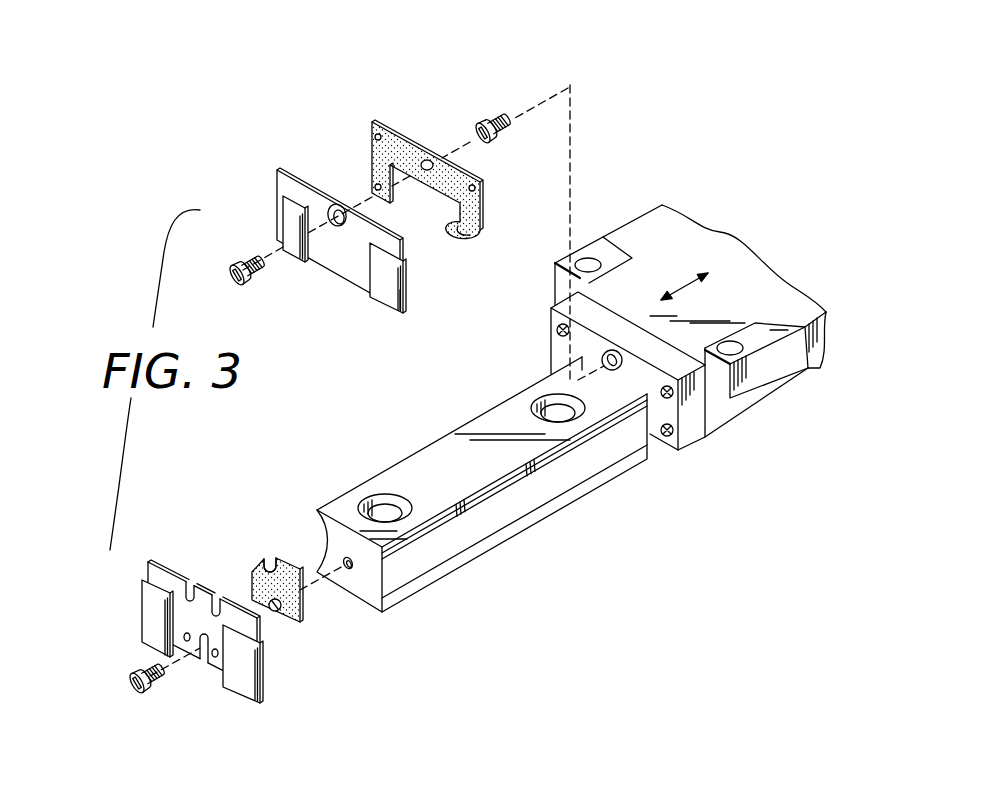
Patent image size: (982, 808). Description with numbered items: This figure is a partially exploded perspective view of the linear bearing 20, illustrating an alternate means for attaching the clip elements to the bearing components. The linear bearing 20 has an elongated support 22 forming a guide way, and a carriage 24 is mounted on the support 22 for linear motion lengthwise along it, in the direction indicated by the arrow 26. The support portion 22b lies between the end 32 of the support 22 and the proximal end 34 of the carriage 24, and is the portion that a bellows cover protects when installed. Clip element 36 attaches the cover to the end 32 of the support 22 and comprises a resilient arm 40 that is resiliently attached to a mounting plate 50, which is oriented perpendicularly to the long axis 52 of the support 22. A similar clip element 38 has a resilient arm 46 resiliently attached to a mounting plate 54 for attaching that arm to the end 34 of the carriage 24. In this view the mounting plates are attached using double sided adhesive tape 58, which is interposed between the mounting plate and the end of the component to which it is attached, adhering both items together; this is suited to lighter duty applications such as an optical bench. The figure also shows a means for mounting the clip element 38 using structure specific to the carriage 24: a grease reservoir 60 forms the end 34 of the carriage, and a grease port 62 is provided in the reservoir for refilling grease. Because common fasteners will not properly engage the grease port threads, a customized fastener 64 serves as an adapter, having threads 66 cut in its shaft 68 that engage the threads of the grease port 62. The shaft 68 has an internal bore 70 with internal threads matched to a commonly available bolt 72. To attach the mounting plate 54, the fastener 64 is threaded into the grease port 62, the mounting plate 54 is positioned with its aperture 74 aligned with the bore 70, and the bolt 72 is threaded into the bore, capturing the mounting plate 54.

The linear bearing 20 is at (645, 521).
The elongated support 22 is at (551, 502).
The support portion 22b is at (458, 553).
The carriage 24 is at (782, 389).
The arrow 26 is at (684, 287).
The end of support 32 is at (361, 594).
The proximal end of carriage 34 is at (553, 346).
The clip element 36 is at (124, 613).
The clip element 38 is at (349, 284).
The resilient arm 40 is at (240, 691).
The resilient arm 46 is at (383, 302).
The mounting plate 50 is at (211, 665).
The long axis of support 52 is at (308, 590).
The mounting plate 54 is at (406, 302).
The double sided adhesive tape 58 is at (470, 230).
The grease reservoir 60 is at (690, 433).
The grease port 62 is at (612, 372).
The customized fastener 64 is at (477, 122).
The threads 66 is at (507, 118).
The shaft 68 is at (506, 132).
The internal bore 70 is at (471, 128).
The bolt 72 is at (245, 262).
The aperture 74 is at (337, 226).